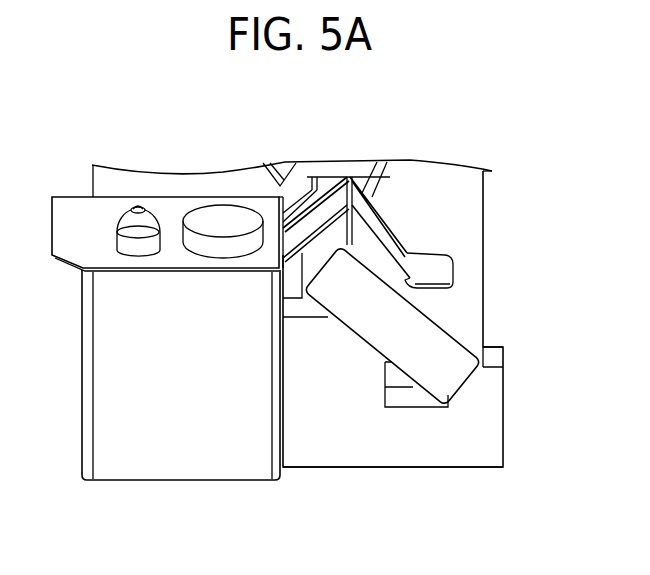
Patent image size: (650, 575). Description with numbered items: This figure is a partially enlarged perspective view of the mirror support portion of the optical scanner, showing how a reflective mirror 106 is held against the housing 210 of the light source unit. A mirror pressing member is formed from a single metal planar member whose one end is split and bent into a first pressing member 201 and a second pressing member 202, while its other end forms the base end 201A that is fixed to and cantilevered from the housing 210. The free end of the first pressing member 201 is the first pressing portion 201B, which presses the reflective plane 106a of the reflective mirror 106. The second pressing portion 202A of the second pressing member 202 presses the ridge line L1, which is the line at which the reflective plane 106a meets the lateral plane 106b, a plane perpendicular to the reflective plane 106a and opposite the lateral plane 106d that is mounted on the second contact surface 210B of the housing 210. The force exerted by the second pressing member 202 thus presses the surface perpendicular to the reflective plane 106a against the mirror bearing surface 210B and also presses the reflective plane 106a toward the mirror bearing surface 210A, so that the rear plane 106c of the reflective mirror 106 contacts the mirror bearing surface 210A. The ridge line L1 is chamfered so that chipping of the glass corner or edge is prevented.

The base end 201A is at (75, 205).
The second pressing member 202 is at (292, 193).
The second pressing portion 202A is at (325, 183).
The first pressing member 201 is at (382, 213).
The first pressing portion 201B is at (405, 253).
The reflective plane 106a is at (474, 197).
The reflective mirror 106 is at (490, 268).
The ridge line L1 is at (342, 228).
The lateral plane 106b is at (293, 272).
The mirror bearing surface 210A is at (367, 325).
The mirror bearing surface 210B is at (453, 380).
The lateral plane 106d is at (475, 379).
The rear plane 106c is at (398, 377).
The housing 210 is at (180, 482).